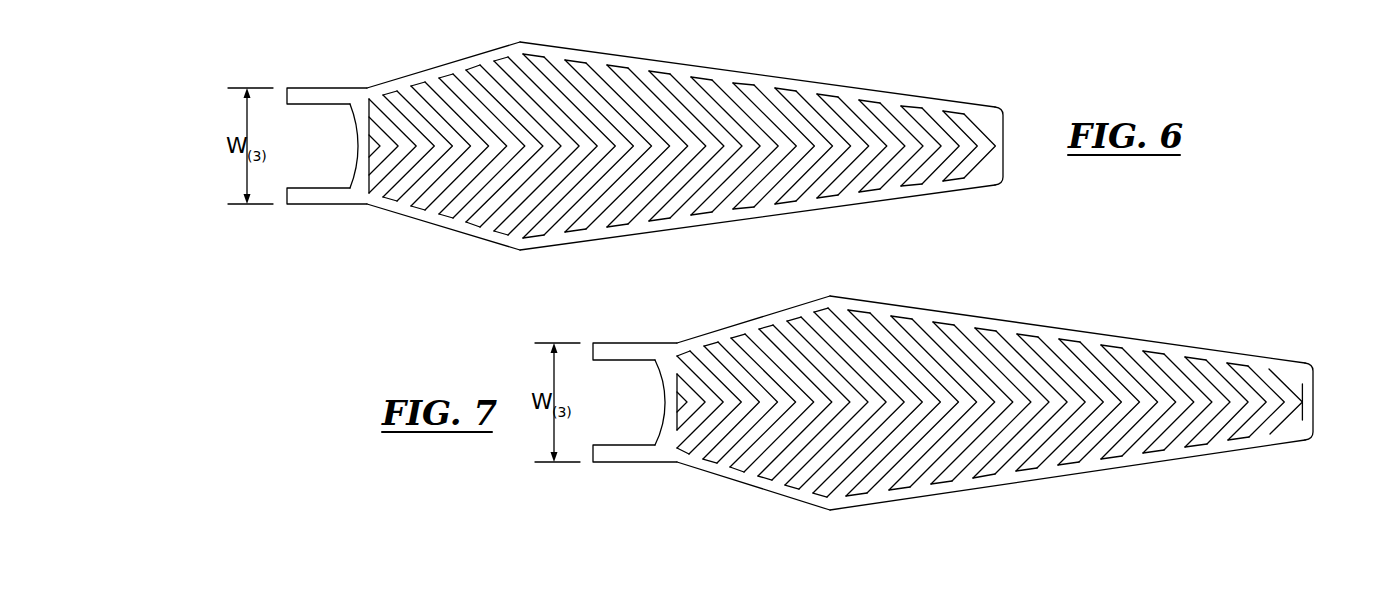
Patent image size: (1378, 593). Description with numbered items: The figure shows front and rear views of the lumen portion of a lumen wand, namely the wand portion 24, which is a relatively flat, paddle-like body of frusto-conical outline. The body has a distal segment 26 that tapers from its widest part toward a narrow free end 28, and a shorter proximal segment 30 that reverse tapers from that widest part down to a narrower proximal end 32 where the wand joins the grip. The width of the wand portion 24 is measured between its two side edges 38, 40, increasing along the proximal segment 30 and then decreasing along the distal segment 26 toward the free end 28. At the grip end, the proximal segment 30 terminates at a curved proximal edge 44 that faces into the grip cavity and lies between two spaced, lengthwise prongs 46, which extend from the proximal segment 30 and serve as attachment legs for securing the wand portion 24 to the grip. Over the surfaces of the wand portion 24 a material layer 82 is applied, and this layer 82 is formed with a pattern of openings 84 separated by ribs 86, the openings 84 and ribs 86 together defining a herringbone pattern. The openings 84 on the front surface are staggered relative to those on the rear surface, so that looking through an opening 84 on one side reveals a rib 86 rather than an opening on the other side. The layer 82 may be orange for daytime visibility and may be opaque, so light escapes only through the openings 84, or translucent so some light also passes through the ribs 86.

In FIG. 6, the wand portion 24 is at (665, 139).
In FIG. 7, the wand portion 24 is at (974, 392).
In FIG. 6, the distal segment 26 is at (709, 62).
In FIG. 7, the distal segment 26 is at (1116, 323).
In FIG. 6, the free end 28 is at (1005, 130).
In FIG. 7, the free end 28 is at (1314, 398).
In FIG. 6, the proximal segment 30 is at (440, 50).
In FIG. 7, the proximal segment 30 is at (785, 497).
In FIG. 6, the proximal end 32 is at (361, 80).
In FIG. 7, the proximal end 32 is at (719, 477).
In FIG. 6, the side edge 38 is at (754, 71).
In FIG. 7, the side edge 38 is at (1037, 323).
In FIG. 6, the side edge 40 is at (669, 232).
In FIG. 7, the side edge 40 is at (1197, 458).
In FIG. 6, the proximal edge 44 is at (356, 128).
In FIG. 7, the proximal edge 44 is at (663, 386).
In FIG. 6, the prongs 46 is at (308, 93).
In FIG. 7, the prongs 46 is at (620, 352).
In FIG. 6, the material layer 82 is at (983, 122).
In FIG. 7, the material layer 82 is at (880, 306).
In FIG. 6, the openings 84 is at (672, 85).
In FIG. 7, the openings 84 is at (958, 338).
In FIG. 6, the ribs 86 is at (518, 97).
In FIG. 7, the ribs 86 is at (1098, 447).